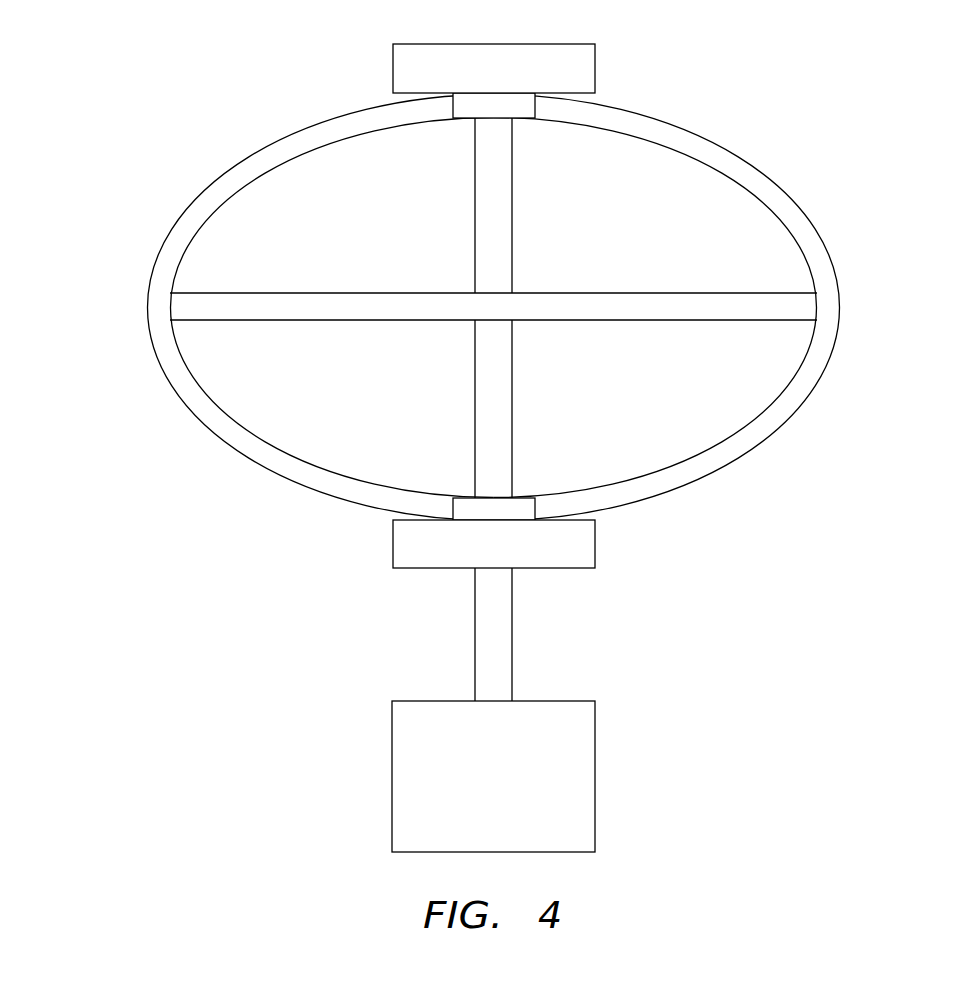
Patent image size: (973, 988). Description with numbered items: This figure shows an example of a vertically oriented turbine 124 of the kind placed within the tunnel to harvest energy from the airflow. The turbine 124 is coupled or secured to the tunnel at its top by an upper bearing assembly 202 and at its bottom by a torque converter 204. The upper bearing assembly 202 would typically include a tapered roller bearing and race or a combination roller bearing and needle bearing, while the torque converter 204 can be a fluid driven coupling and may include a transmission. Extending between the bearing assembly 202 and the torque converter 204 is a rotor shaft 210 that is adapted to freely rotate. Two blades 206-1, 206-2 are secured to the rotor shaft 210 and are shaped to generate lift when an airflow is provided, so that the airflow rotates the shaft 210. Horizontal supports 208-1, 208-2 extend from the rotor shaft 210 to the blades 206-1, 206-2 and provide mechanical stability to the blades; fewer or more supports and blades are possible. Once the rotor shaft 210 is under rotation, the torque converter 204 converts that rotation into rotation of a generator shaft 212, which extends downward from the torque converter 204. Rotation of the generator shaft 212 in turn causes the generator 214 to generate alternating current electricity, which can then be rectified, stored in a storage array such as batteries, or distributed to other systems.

The turbine 124 is at (806, 110).
The upper bearing assembly 202 is at (391, 61).
The torque converter 204 is at (597, 551).
The blade 206-1 is at (192, 196).
The blade 206-2 is at (836, 361).
The support 208-1 is at (332, 292).
The support 208-2 is at (608, 292).
The rotor shaft 210 is at (474, 401).
The generator shaft 212 is at (473, 625).
The generator 214 is at (493, 776).